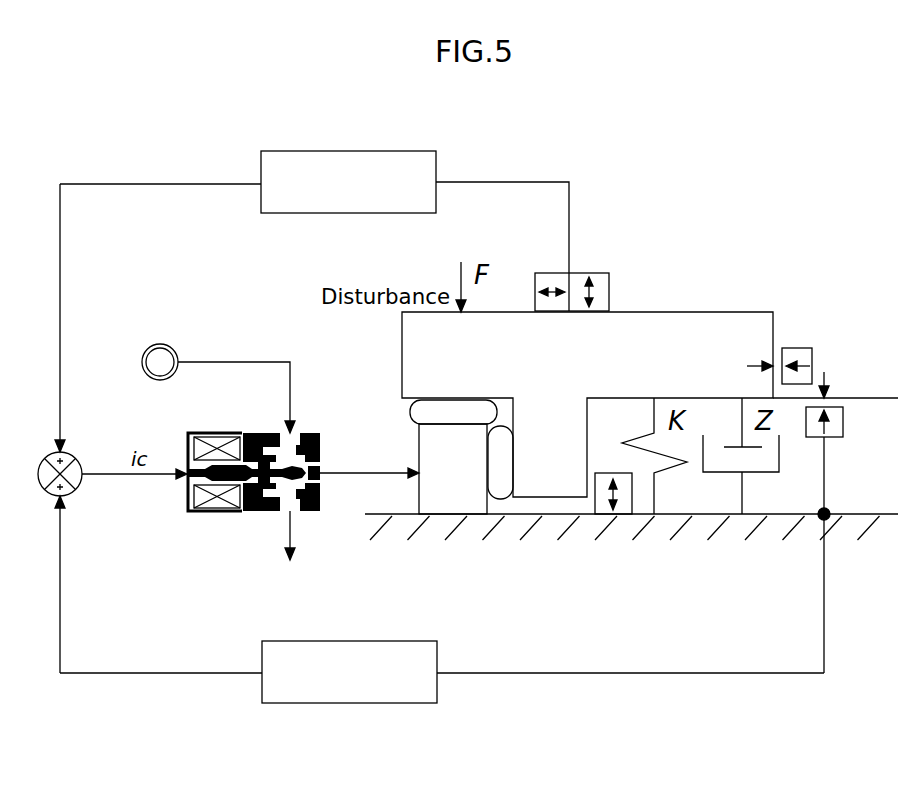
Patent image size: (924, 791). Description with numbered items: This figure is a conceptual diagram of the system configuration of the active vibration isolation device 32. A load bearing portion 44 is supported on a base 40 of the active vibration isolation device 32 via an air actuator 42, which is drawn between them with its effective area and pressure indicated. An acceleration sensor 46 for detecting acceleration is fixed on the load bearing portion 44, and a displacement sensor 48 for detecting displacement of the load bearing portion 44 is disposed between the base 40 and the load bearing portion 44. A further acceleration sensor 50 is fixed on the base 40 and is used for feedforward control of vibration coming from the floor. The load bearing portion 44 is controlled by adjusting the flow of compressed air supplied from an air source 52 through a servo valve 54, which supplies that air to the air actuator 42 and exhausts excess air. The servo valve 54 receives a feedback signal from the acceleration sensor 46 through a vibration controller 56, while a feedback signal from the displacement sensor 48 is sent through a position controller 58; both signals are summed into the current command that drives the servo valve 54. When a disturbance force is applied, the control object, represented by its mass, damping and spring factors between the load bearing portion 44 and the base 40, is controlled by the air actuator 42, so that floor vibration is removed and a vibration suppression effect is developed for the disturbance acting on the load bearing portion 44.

The active vibration isolation device 32 is at (724, 205).
The base 40 is at (707, 516).
The air actuator 42 is at (428, 445).
The load bearing portion 44 is at (410, 345).
The acceleration sensor 46 is at (609, 291).
The displacement sensor 48 is at (812, 366).
The acceleration sensor 50 is at (632, 518).
The air source 52 is at (163, 344).
The servo valve 54 is at (318, 511).
The vibration controller 56 is at (348, 151).
The position controller 58 is at (348, 641).